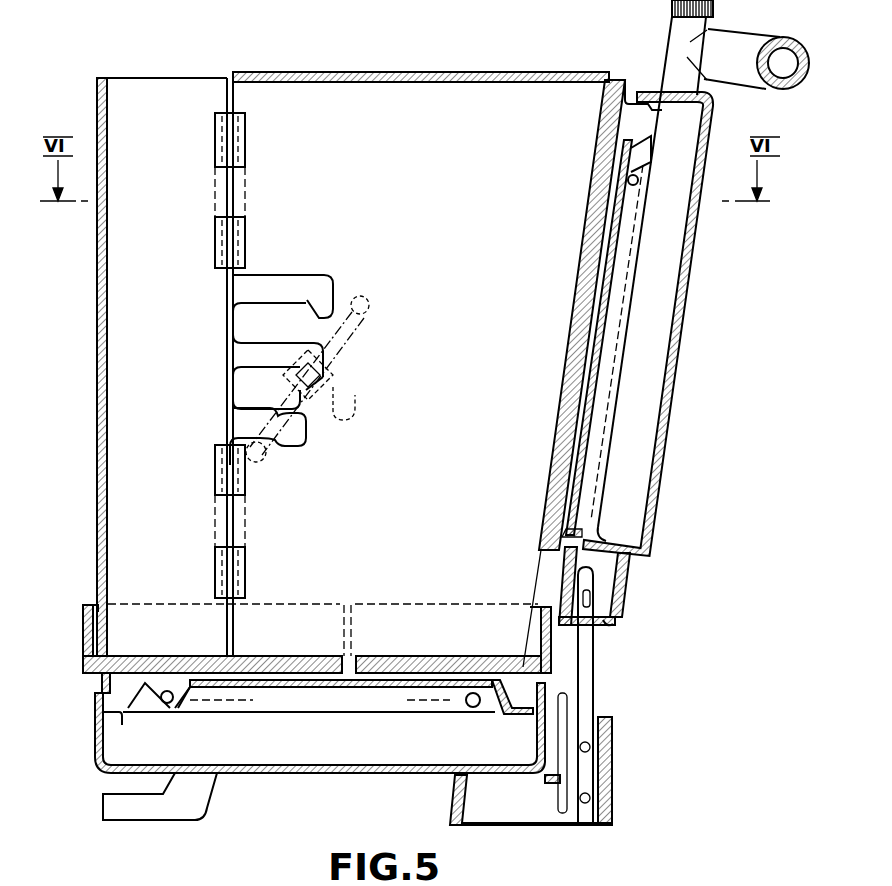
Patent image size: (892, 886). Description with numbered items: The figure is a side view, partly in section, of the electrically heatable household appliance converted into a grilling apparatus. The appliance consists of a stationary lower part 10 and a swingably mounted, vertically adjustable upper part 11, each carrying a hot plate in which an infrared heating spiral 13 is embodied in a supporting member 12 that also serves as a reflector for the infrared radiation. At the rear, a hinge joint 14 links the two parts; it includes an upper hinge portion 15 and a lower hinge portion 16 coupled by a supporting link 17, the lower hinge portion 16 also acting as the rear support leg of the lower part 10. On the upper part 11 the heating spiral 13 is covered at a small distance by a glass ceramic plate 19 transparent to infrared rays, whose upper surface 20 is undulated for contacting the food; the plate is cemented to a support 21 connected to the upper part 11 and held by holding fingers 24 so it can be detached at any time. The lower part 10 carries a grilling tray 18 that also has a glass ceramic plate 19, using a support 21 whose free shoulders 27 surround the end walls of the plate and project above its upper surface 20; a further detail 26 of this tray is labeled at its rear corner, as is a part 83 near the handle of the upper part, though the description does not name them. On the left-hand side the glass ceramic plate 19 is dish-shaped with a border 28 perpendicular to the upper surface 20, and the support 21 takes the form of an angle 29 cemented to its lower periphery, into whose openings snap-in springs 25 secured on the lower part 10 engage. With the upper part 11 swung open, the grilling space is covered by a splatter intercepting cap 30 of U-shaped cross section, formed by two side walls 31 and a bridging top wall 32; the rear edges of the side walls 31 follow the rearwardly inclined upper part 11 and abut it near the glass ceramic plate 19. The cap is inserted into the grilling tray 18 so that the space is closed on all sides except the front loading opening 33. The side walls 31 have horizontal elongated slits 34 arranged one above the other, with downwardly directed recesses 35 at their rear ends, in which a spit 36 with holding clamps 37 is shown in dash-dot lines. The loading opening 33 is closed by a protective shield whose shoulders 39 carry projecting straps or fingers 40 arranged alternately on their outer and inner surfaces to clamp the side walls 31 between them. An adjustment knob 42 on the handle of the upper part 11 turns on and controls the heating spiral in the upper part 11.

The lower part 10 is at (311, 778).
The upper part 11 is at (668, 415).
The supporting member 12 is at (330, 690).
The infrared heating spiral 13 is at (170, 708).
The hinge joint 14 is at (618, 623).
The upper hinge portion 15 is at (630, 579).
The lower hinge portion 16 is at (601, 762).
The supporting link 17 is at (606, 697).
The grilling tray 18 is at (277, 604).
The glass ceramic plate 19 is at (320, 660).
The upper surface 20 is at (178, 658).
The support 21 is at (492, 712).
The holding fingers 24 is at (530, 716).
The snap-in springs 25 is at (121, 724).
The floor corner 26 is at (540, 660).
The free shoulders 27 is at (538, 610).
The border 28 is at (83, 646).
The angle 29 is at (98, 682).
The splatter intercepting cap 30 is at (317, 70).
The side walls 31 is at (428, 248).
The top wall 32 is at (470, 72).
The loading opening 33 is at (276, 517).
The elongated slits 34 is at (258, 358).
The recesses 35 is at (328, 315).
The spit 36 is at (334, 378).
The holding clamps 37 is at (367, 318).
The shoulders 39 is at (164, 377).
The projecting straps or fingers 40 is at (247, 140).
The adjustment knob 42 is at (670, 10).
The handle 83 is at (748, 40).